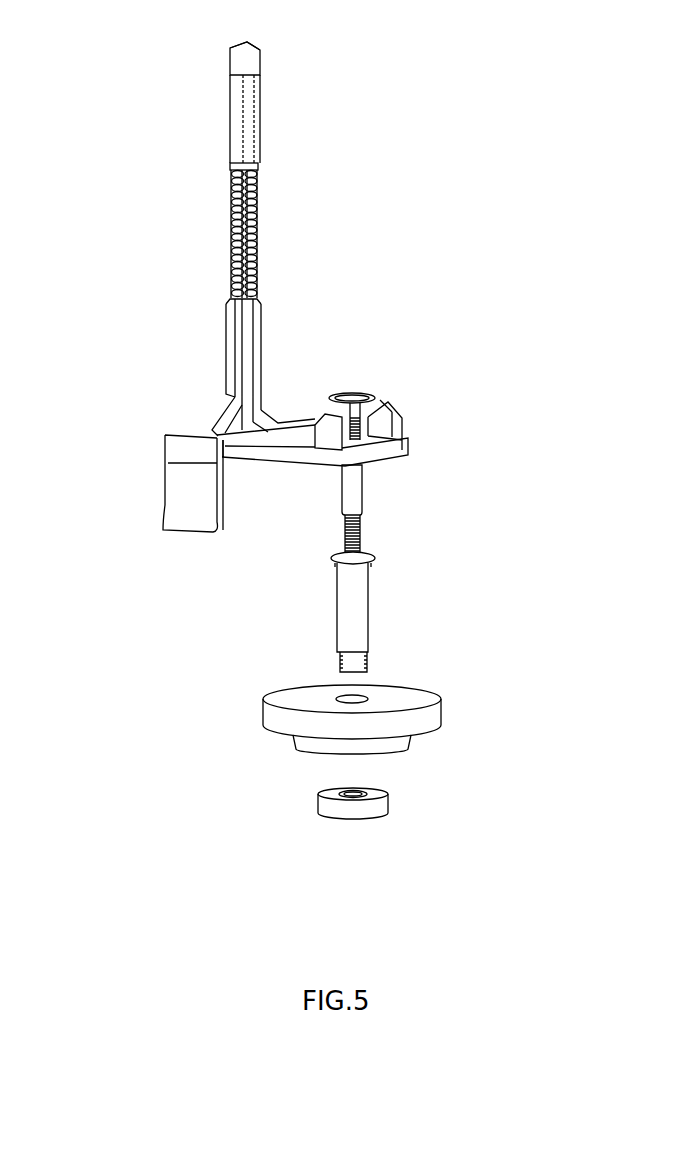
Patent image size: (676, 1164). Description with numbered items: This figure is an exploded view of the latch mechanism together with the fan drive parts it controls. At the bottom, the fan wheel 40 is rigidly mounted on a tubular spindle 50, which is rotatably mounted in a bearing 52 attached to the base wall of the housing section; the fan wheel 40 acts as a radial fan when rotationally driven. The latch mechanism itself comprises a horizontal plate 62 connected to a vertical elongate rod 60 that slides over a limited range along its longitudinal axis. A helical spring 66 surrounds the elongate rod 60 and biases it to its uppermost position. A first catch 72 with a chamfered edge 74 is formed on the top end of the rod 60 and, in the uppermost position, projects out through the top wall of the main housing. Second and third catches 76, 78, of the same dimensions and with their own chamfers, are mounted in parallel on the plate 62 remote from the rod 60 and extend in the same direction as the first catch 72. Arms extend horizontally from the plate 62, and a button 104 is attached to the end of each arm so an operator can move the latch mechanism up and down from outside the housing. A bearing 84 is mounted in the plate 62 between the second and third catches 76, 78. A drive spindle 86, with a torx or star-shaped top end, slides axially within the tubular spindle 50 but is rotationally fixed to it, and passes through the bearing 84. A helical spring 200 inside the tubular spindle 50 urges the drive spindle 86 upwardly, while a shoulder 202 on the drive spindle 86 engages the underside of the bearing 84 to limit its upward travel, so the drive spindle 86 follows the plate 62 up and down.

The fan wheel 40 is at (430, 715).
The tubular spindle 50 is at (362, 625).
The bearing 52 is at (365, 808).
The elongate rod 60 is at (227, 355).
The horizontal plate 62 is at (286, 460).
The helical spring 66 is at (256, 221).
The first catch 72 is at (245, 60).
The chamfered edge 74 is at (259, 47).
The second catch 76 is at (400, 427).
The third catch 78 is at (316, 417).
The bearing 84 is at (356, 392).
The drive spindle 86 is at (380, 487).
The button 104 is at (175, 480).
The helical spring 200 is at (380, 530).
The shoulder 202 is at (380, 460).